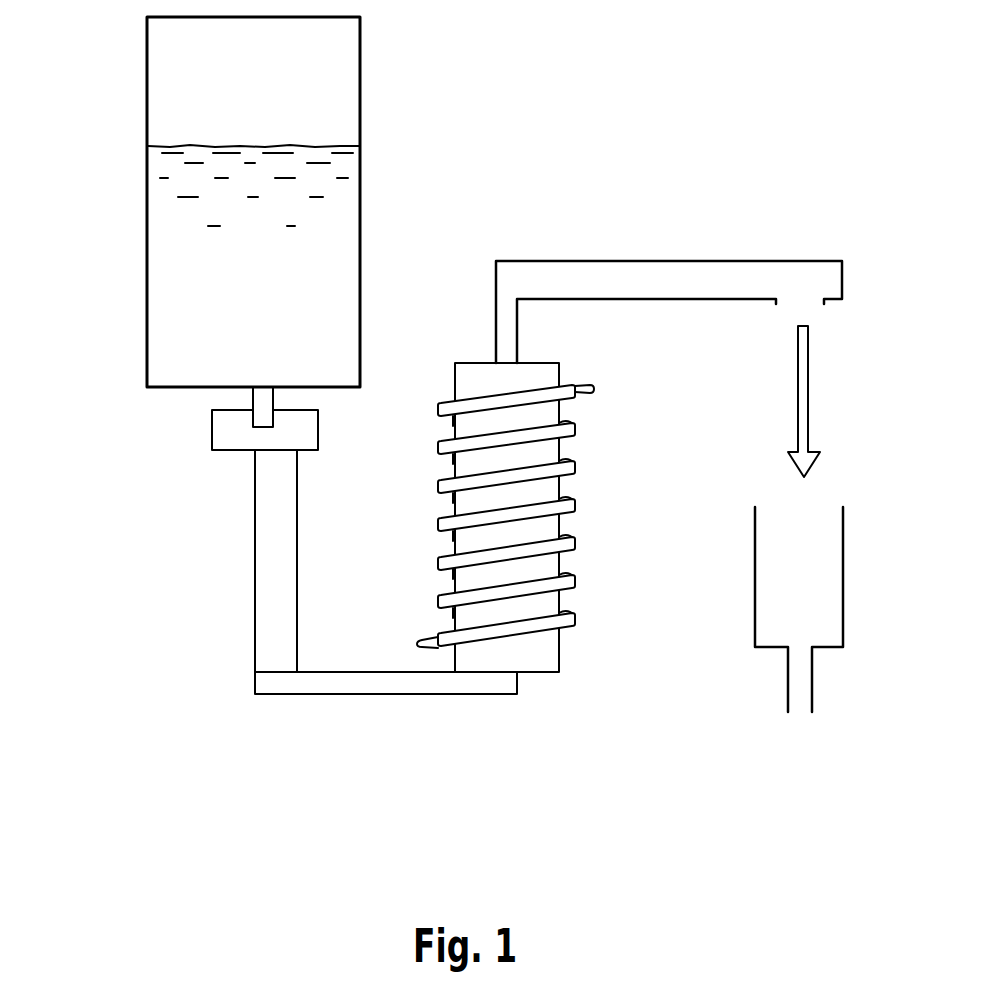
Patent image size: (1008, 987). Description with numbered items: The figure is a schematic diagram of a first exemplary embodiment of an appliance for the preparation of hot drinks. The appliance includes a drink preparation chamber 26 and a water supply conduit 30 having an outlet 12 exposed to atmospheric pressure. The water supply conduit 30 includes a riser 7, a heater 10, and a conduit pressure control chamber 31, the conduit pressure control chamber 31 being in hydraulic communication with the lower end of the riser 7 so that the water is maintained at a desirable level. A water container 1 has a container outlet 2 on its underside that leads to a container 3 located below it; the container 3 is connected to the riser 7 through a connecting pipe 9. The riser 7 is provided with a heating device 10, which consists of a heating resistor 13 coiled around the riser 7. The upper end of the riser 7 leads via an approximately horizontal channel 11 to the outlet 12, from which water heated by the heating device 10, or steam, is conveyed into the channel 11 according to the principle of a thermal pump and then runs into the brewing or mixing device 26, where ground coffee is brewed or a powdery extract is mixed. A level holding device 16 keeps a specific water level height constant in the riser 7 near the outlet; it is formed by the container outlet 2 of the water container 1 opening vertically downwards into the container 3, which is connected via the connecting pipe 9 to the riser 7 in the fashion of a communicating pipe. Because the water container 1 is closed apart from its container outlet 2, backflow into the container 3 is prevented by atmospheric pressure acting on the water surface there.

The water container 1 is at (360, 60).
The container outlet 2 is at (250, 397).
The container 3 is at (268, 632).
The riser 7 is at (545, 650).
The connecting pipe 9 is at (385, 680).
The heating device 10 is at (629, 415).
The channel 11 is at (681, 273).
The outlet 12 is at (802, 308).
The heating resistor 13 is at (612, 524).
The level holding device 16 is at (244, 535).
The drink preparation chamber 26 is at (843, 598).
The water supply conduit 30 is at (111, 260).
The conduit pressure control chamber 31 is at (386, 184).